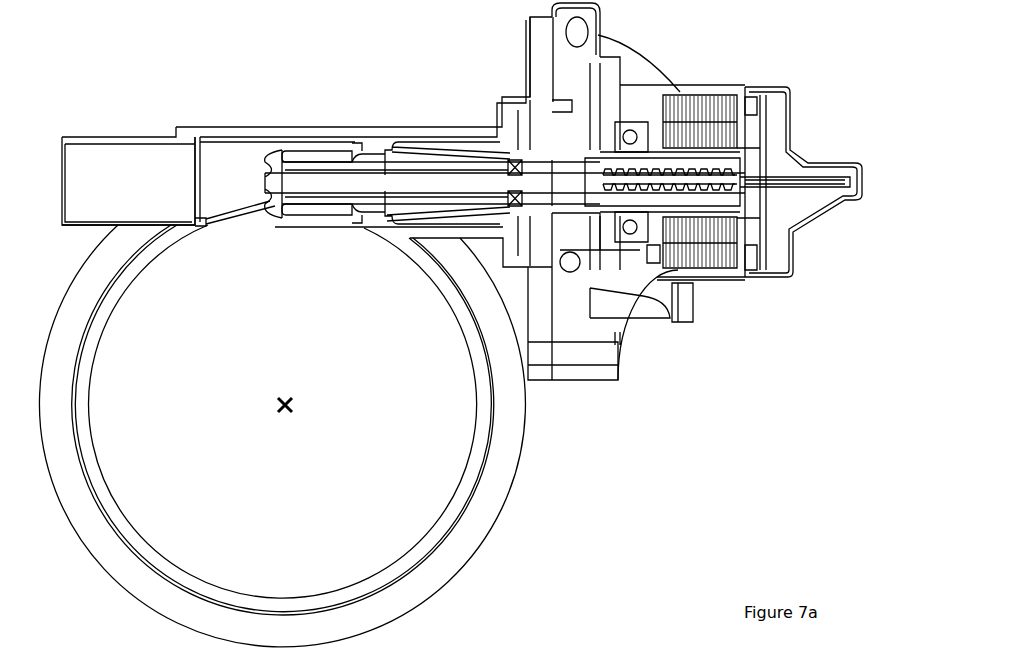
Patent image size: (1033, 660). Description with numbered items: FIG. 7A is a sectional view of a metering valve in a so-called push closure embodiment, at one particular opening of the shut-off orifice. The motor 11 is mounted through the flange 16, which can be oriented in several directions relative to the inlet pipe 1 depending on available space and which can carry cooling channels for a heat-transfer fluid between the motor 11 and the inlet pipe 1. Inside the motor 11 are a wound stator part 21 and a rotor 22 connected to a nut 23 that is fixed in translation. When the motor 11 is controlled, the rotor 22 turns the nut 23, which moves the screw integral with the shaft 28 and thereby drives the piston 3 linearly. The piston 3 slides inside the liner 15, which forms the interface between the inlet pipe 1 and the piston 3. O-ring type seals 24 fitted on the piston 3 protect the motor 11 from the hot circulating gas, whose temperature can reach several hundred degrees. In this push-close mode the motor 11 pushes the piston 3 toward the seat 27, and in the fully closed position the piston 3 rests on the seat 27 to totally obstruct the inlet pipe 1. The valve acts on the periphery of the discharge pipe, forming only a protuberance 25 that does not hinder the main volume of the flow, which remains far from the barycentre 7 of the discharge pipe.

The inlet pipe 1 is at (148, 163).
The piston 3 is at (275, 152).
The barycentre 7 is at (296, 407).
The motor 11 is at (757, 285).
The liner 15 is at (320, 136).
The flange 16 is at (588, 25).
The wound stator part 21 is at (685, 95).
The rotor 22 is at (712, 205).
The nut 23 is at (693, 167).
The O-ring type seals 24 is at (378, 142).
The protuberance 25 is at (305, 228).
The seat 27 is at (122, 227).
The shaft 28 is at (517, 177).